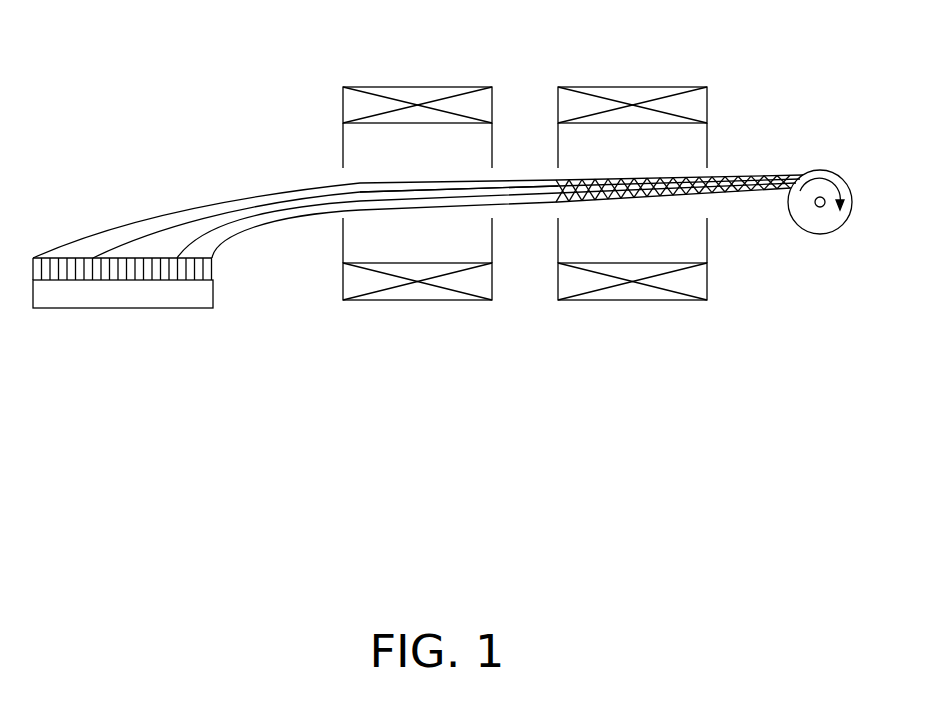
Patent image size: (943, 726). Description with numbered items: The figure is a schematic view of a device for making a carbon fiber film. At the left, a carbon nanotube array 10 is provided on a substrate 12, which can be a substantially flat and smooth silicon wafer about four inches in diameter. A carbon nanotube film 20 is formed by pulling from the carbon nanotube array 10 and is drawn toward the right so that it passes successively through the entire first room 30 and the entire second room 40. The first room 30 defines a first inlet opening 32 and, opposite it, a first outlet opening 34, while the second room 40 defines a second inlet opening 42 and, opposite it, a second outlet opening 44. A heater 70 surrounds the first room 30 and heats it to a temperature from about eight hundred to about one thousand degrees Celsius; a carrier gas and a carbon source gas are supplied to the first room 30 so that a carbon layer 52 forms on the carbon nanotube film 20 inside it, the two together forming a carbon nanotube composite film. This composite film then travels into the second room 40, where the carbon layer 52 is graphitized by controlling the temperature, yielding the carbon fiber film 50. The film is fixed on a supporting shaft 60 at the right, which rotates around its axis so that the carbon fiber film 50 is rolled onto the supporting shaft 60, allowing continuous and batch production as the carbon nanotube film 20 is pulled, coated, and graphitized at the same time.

The carbon nanotube array 10 is at (212, 272).
The substrate 12 is at (165, 302).
The carbon nanotube film 20 is at (267, 222).
The first room 30 is at (372, 196).
The first inlet opening 32 is at (340, 177).
The first outlet opening 34 is at (493, 168).
The second room 40 is at (669, 215).
The second inlet opening 42 is at (557, 212).
The second outlet opening 44 is at (707, 207).
The carbon fiber film 50 is at (747, 175).
The carbon layer 52 is at (450, 200).
The supporting shaft 60 is at (817, 220).
The heater 70 is at (408, 95).